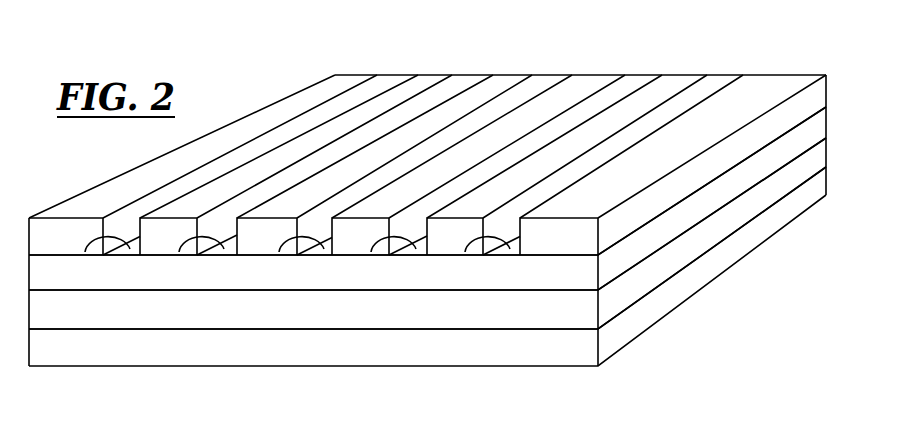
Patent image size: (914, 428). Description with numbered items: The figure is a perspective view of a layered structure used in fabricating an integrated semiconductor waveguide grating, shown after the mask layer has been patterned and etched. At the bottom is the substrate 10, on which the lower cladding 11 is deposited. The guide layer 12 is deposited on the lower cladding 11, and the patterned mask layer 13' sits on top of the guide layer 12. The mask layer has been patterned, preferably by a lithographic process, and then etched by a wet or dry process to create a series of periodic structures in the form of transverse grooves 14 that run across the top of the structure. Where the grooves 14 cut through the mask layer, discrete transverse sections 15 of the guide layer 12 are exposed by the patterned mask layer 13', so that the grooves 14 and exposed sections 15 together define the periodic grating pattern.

The substrate 10 is at (817, 188).
The lower cladding 11 is at (817, 152).
The guide layer 12 is at (817, 123).
The patterned mask layer 13' is at (447, 141).
The transverse grooves 14 is at (720, 76).
The transverse sections of the guide layer 15 is at (85, 252).